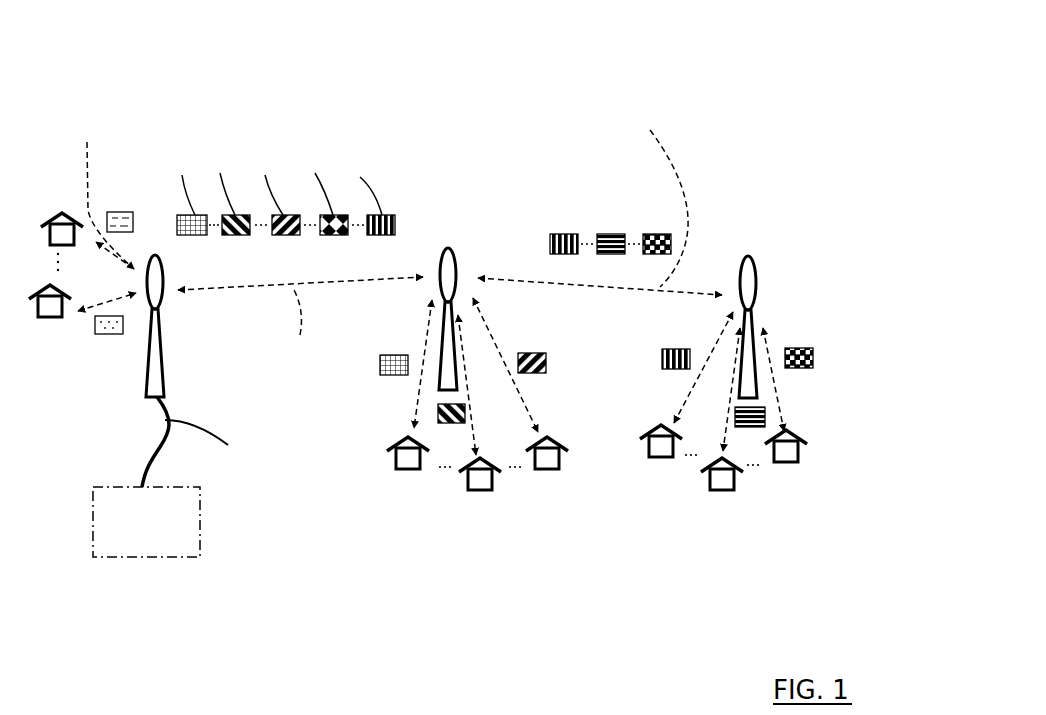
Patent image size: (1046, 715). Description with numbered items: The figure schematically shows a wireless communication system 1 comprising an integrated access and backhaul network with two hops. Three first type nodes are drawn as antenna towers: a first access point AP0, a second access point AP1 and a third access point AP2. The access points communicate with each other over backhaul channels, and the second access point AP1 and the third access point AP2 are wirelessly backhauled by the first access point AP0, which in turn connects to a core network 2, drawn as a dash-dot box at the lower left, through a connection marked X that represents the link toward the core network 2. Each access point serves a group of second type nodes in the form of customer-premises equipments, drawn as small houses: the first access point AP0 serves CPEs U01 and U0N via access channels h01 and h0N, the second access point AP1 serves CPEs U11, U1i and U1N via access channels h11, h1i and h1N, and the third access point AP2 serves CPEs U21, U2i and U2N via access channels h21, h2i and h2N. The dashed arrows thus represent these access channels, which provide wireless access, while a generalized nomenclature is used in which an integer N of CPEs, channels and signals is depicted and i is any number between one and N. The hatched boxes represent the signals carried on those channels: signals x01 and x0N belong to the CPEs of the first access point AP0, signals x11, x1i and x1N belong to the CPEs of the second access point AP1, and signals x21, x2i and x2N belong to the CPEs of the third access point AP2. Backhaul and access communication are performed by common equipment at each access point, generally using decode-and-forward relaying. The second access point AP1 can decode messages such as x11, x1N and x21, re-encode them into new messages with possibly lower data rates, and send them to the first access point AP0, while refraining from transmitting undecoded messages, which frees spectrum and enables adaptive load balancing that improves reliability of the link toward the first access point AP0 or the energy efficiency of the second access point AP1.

The wireless communication system 1 is at (262, 52).
The core network 2 is at (151, 543).
The backhaul connection X is at (204, 442).
The first access point AP0 is at (170, 315).
The second access point AP1 is at (469, 254).
The third access point AP2 is at (731, 270).
The customer-premises equipment U0N is at (55, 212).
The customer-premises equipment U01 is at (43, 314).
The customer-premises equipment U11 is at (397, 455).
The customer-premises equipment U1i is at (487, 487).
The customer-premises equipment U1N is at (553, 460).
The customer-premises equipment U21 is at (655, 456).
The customer-premises equipment U2i is at (718, 489).
The customer-premises equipment U2N is at (795, 462).
The signal x0N is at (118, 211).
The signal x01 is at (110, 334).
The signal x11 is at (398, 356).
The signal x1i is at (447, 424).
The signal x1N is at (545, 368).
The signal x21 is at (563, 234).
The signal x2i is at (612, 234).
The signal x2N is at (657, 234).
The access channel h0N is at (104, 191).
The access channel h01 is at (110, 297).
The access channel h11 is at (418, 404).
The access channel h1i is at (463, 352).
The access channel h1N is at (497, 333).
The access channel h21 is at (687, 402).
The access channel h2i is at (733, 396).
The access channel h2N is at (777, 394).